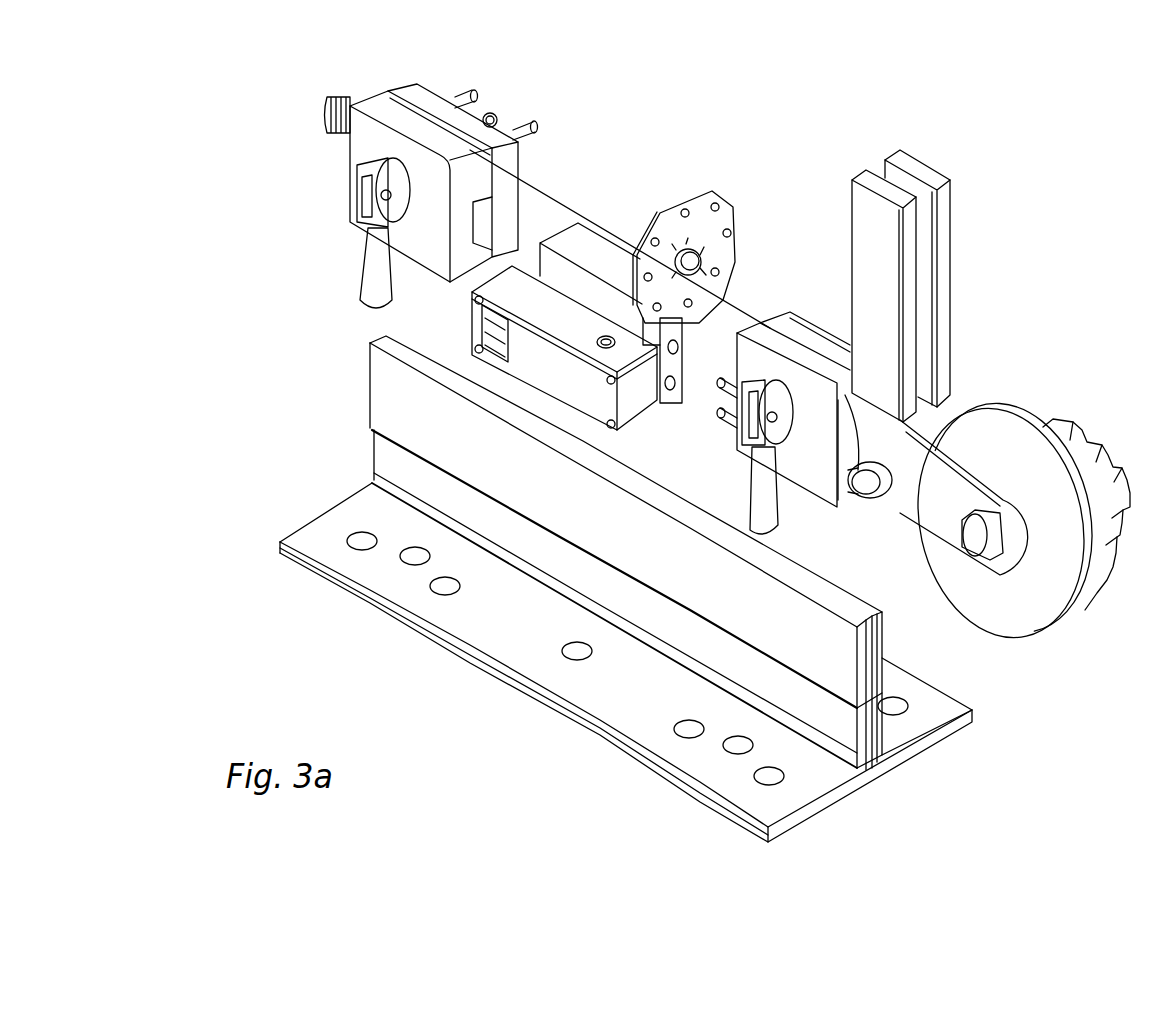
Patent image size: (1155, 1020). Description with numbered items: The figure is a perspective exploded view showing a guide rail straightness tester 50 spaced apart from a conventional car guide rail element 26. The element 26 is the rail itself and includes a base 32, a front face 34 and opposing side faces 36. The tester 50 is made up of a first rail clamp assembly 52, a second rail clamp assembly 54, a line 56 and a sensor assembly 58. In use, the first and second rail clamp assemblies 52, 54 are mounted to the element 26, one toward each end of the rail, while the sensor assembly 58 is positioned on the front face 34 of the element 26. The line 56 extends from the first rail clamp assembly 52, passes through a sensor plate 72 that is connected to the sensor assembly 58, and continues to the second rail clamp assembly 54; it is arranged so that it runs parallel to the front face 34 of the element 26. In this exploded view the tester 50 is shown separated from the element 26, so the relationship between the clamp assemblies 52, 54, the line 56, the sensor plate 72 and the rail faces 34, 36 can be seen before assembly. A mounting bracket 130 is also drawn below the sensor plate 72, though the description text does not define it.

The element 26 is at (910, 764).
The base 32 is at (830, 810).
The front face 34 is at (825, 588).
The side faces 36 is at (883, 625).
The guide rail straightness tester 50 is at (1089, 194).
The first rail clamp assembly 52 is at (392, 90).
The second rail clamp assembly 54 is at (1007, 402).
The line 56 is at (550, 193).
The sensor assembly 58 is at (637, 418).
The sensor plate 72 is at (713, 192).
The mounting bracket 130 is at (683, 357).